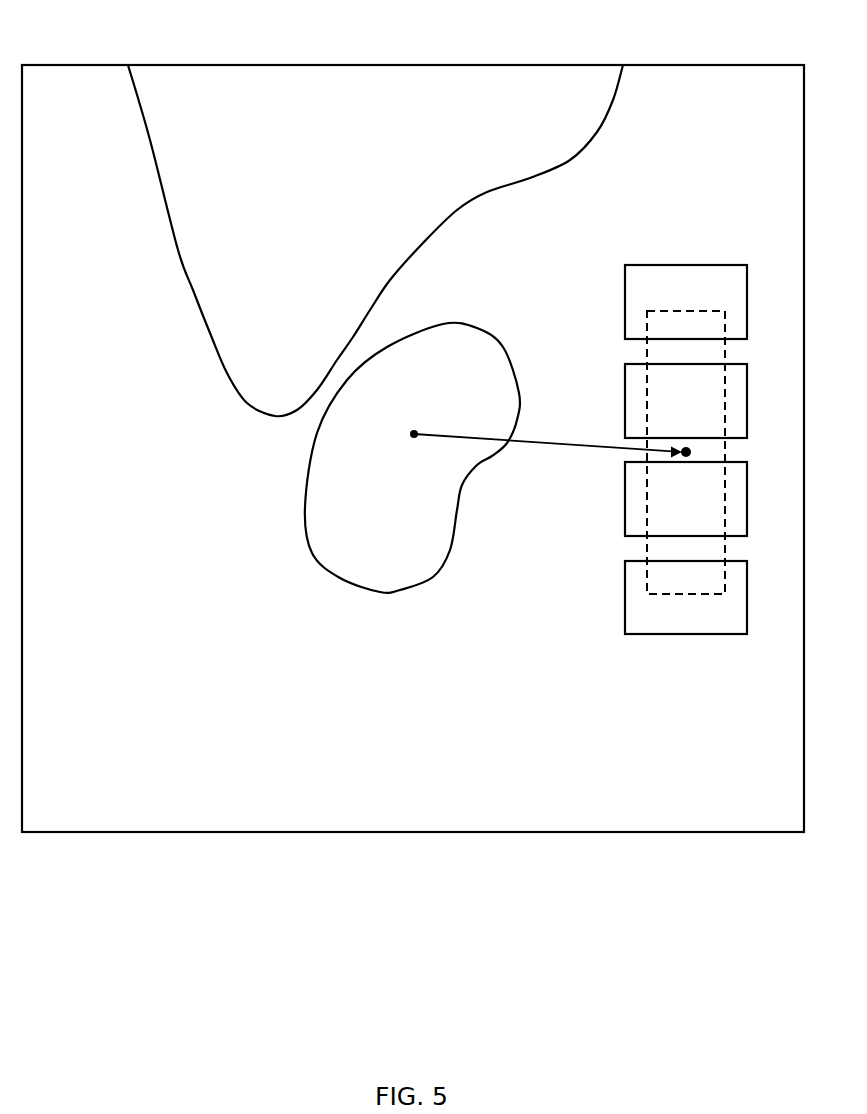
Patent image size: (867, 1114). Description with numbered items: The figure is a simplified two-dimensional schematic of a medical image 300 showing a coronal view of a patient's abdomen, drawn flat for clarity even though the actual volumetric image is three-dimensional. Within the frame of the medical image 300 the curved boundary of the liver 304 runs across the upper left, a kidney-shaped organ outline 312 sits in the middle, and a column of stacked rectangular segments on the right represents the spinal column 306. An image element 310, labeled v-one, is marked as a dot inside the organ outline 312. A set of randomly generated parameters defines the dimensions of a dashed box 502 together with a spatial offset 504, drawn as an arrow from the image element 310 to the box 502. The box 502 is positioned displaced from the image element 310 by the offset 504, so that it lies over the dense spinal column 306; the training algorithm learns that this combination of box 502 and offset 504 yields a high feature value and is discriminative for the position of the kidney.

The medical image 300 is at (683, 65).
The liver 304 is at (598, 132).
The spinal column 306 is at (717, 265).
The image element v1 310 is at (410, 436).
The organ (kidney) 312 is at (440, 563).
The box 502 is at (647, 353).
The spatial offset 504 is at (553, 443).